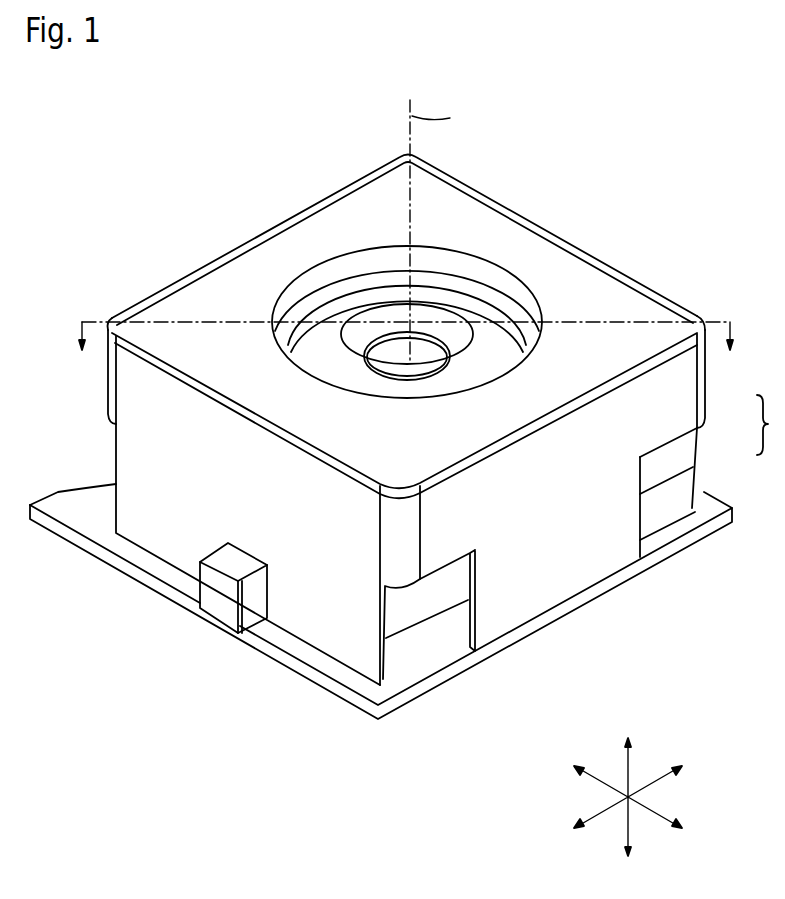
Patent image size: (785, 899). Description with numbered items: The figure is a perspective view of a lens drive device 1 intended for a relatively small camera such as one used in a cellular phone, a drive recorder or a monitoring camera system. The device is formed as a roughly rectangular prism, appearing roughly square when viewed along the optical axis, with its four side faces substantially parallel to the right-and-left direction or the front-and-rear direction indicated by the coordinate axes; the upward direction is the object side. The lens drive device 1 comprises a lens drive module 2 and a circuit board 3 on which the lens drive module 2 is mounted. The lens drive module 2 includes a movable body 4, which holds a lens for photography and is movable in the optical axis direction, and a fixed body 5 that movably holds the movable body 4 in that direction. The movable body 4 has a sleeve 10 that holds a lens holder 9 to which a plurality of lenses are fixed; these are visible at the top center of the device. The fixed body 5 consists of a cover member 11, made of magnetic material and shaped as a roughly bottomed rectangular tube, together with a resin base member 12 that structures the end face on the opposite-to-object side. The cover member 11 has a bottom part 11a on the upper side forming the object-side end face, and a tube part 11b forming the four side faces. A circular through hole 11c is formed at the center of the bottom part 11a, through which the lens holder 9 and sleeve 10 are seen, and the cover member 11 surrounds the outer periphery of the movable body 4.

The lens drive device 1 is at (607, 109).
The lens drive module 2 is at (620, 276).
The circuit board 3 is at (684, 548).
The movable body 4 is at (515, 307).
The fixed body 5 is at (768, 425).
The lens holder 9 is at (462, 295).
The sleeve 10 is at (515, 307).
The cover member 11 is at (705, 390).
The bottom part 11a is at (238, 309).
The tube part 11b is at (238, 491).
The circular through hole 11c is at (337, 265).
The base member 12 is at (696, 460).